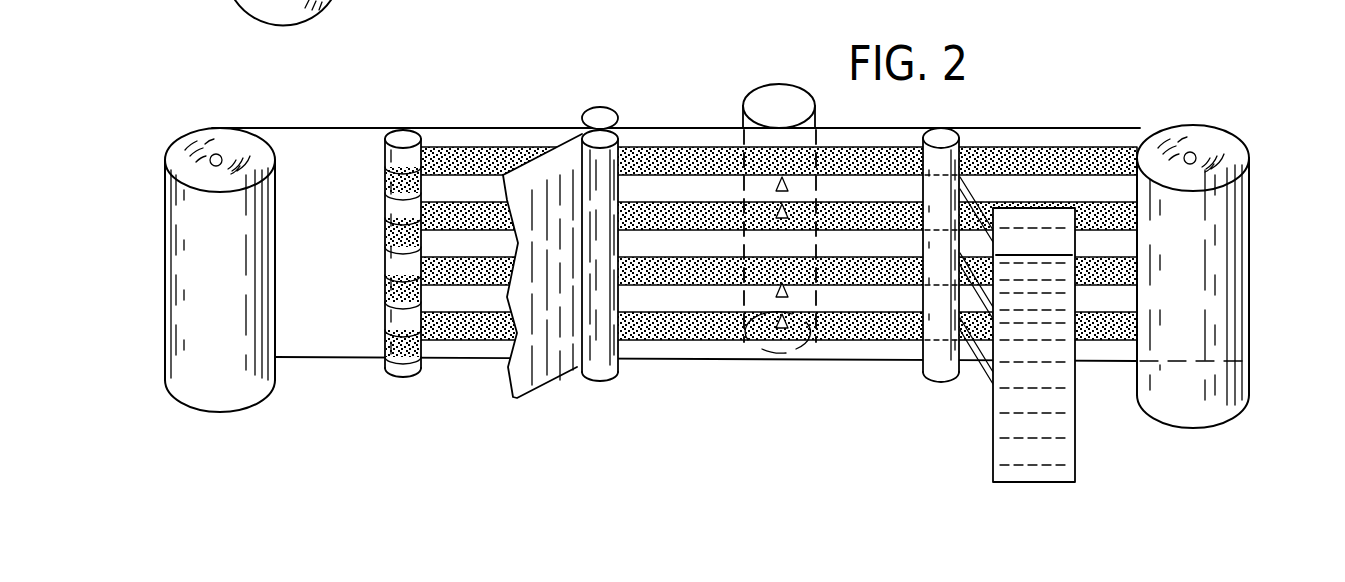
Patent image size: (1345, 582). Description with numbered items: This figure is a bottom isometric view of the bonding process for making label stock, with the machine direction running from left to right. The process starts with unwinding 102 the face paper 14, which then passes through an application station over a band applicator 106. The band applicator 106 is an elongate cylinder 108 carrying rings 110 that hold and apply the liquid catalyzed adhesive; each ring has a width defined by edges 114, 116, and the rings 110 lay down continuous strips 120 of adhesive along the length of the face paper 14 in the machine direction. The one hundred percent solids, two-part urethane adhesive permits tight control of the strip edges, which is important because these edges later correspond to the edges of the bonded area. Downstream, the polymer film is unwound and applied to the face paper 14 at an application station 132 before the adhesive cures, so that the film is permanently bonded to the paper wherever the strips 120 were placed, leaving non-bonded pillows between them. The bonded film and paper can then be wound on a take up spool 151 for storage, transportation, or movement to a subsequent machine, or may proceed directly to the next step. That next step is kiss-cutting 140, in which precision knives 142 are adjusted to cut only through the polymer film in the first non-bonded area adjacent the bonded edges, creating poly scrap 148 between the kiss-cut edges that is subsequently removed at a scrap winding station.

The face paper 14 is at (290, 143).
The unwinding 102 is at (160, 330).
The band applicator 106 is at (408, 242).
The elongate cylinder 108 is at (406, 135).
The rings 110 is at (381, 175).
The edge 114 is at (413, 197).
The edge 116 is at (408, 168).
The continuous strips 120 is at (688, 212).
The application station 132 is at (601, 394).
The kiss-cutting 140 is at (775, 62).
The precision knives 142 is at (772, 323).
The poly scrap 148 is at (983, 343).
The take up spool 151 is at (1258, 212).